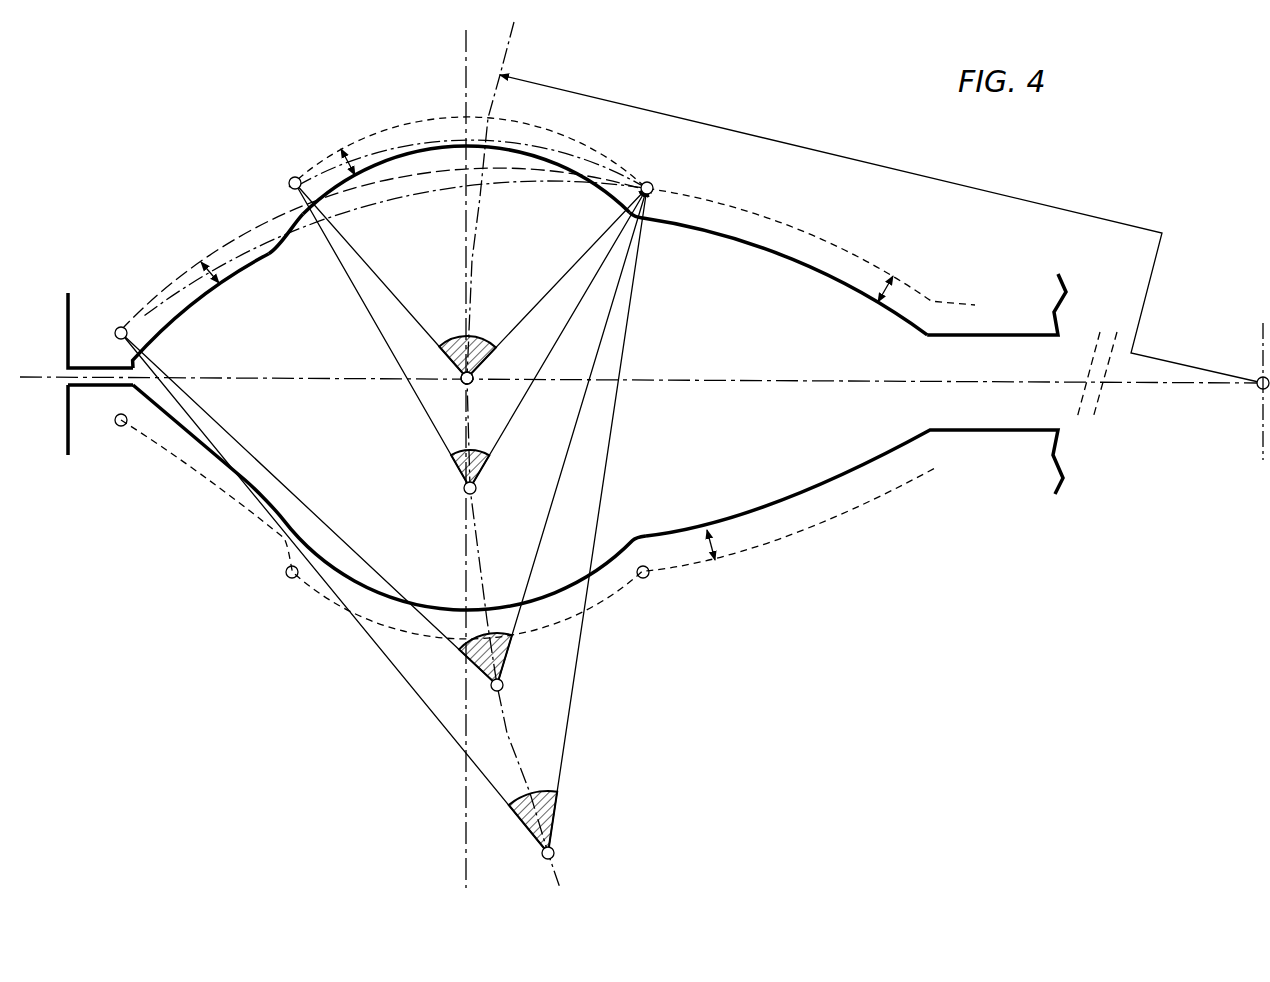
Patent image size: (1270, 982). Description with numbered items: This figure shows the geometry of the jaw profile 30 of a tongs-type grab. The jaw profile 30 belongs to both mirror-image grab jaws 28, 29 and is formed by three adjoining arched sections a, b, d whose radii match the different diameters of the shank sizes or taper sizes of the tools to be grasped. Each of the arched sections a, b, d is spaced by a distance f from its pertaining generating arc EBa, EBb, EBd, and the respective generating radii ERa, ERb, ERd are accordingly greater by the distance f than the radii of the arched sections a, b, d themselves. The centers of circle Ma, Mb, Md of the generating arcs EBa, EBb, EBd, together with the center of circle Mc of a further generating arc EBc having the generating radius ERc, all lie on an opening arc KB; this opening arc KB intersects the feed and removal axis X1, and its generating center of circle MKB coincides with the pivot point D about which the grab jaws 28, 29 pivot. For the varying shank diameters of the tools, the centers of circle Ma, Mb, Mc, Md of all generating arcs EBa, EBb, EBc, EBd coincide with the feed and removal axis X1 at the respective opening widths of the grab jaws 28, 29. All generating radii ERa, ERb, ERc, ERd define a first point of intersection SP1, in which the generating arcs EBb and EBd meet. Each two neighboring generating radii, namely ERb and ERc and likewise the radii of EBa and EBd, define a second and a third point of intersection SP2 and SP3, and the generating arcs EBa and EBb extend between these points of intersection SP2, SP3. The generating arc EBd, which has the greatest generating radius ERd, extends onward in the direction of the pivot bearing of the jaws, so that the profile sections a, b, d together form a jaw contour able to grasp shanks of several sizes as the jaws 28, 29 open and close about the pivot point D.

The grab jaw 28 is at (67, 318).
The grab jaw 29 is at (67, 417).
The jaw profile 30 is at (903, 317).
The first point of intersection SP1 is at (649, 183).
The second point of intersection SP2 is at (293, 178).
The third point of intersection SP3 is at (120, 328).
The feed and removal axis X1 is at (481, 340).
The center of circle of generating arc EBb Mb is at (455, 345).
The center of circle of generating arc EBc Mc is at (472, 496).
The center of circle of generating arc EBa Ma is at (503, 687).
The center of circle of generating arc EBd Md is at (554, 853).
The pivot point D is at (1260, 378).
The generating center of circle of the opening arc MKB is at (1260, 389).
The opening arc KB is at (507, 720).
The generating radius of arc EBa ERa is at (580, 417).
The generating radius of arc EBb ERb is at (407, 313).
The generating radius of arc EBc ERc is at (430, 423).
The generating radius of arc EBd ERd is at (600, 503).
The generating arc EBa is at (227, 242).
The generating arc EBb is at (417, 122).
The generating arc EBc is at (555, 150).
The generating arc EBd is at (257, 248).
The arched section a is at (177, 317).
The arched section b is at (510, 147).
The arched section d is at (813, 263).
The distance f is at (203, 262).